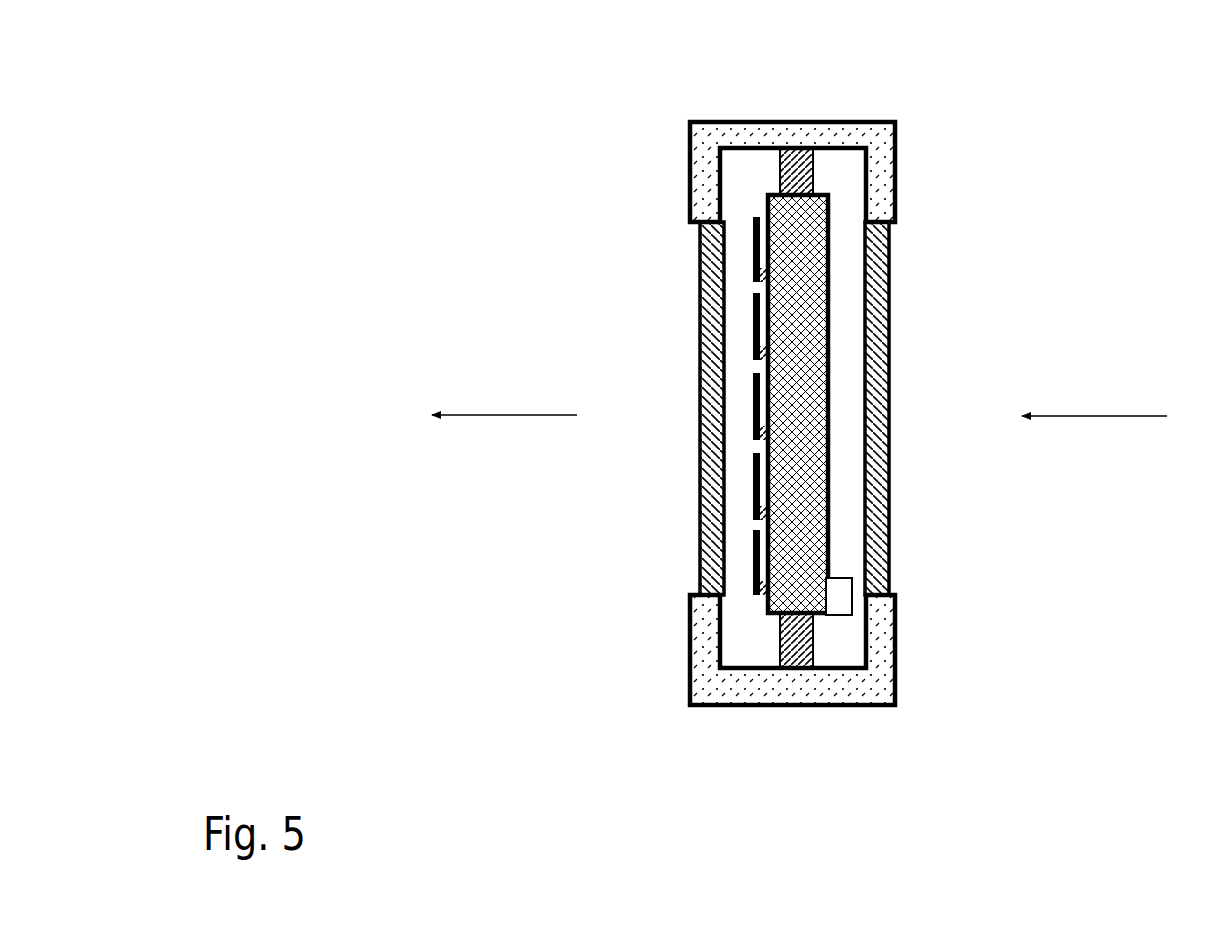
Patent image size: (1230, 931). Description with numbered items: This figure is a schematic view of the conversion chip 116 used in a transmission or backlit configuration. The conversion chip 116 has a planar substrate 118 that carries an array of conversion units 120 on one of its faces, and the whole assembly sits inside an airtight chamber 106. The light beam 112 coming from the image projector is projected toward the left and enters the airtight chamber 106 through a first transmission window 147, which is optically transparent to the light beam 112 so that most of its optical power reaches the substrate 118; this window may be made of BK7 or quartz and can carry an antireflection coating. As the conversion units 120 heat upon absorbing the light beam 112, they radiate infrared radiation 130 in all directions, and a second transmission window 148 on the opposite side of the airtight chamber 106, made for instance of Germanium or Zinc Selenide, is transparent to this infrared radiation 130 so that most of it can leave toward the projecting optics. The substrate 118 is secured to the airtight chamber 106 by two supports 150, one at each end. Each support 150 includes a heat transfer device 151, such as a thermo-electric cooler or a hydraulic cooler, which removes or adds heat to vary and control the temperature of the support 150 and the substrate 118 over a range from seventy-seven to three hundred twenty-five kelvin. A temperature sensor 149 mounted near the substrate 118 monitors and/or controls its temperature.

The airtight chamber 106 is at (893, 122).
The light beam 112 is at (1088, 415).
The conversion chip 116 is at (987, 128).
The substrate 118 is at (803, 529).
The array of conversion units 120 is at (757, 497).
The infrared radiation 130 is at (499, 414).
The first transmission window 147 is at (880, 244).
The second transmission window 148 is at (703, 238).
The temperature sensor 149 is at (837, 615).
The support 150 is at (788, 148).
The heat transfer device 151 is at (806, 150).